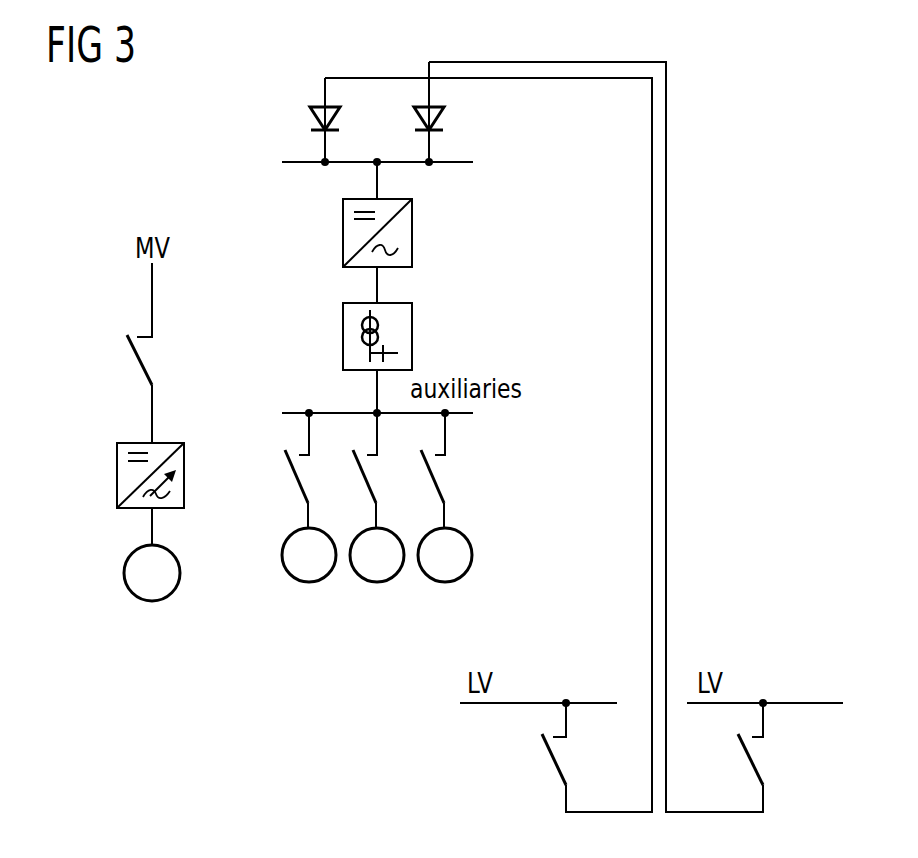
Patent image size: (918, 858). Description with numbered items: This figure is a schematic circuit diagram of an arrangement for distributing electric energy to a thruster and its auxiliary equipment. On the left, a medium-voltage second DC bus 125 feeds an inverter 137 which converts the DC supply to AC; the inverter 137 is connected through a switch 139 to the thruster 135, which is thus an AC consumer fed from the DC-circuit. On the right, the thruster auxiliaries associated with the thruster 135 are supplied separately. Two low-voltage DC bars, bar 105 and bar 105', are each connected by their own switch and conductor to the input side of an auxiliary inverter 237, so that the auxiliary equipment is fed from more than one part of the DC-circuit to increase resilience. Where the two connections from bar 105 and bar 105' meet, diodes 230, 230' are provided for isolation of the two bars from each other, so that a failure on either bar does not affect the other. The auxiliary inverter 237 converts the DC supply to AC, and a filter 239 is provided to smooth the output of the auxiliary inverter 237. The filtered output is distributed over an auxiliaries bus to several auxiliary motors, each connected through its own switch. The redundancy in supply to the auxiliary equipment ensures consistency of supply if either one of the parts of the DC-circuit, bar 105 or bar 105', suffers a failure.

The diode 230 is at (290, 112).
The diode 230' is at (468, 112).
The auxiliary inverter 237 is at (343, 233).
The filter 239 is at (343, 338).
The second DC bus 125 is at (152, 295).
The switch 139 is at (140, 361).
The inverter 137 is at (117, 477).
The thruster 135 is at (111, 554).
The DC bus bar 105 is at (535, 739).
The DC bus bar 105' is at (771, 739).